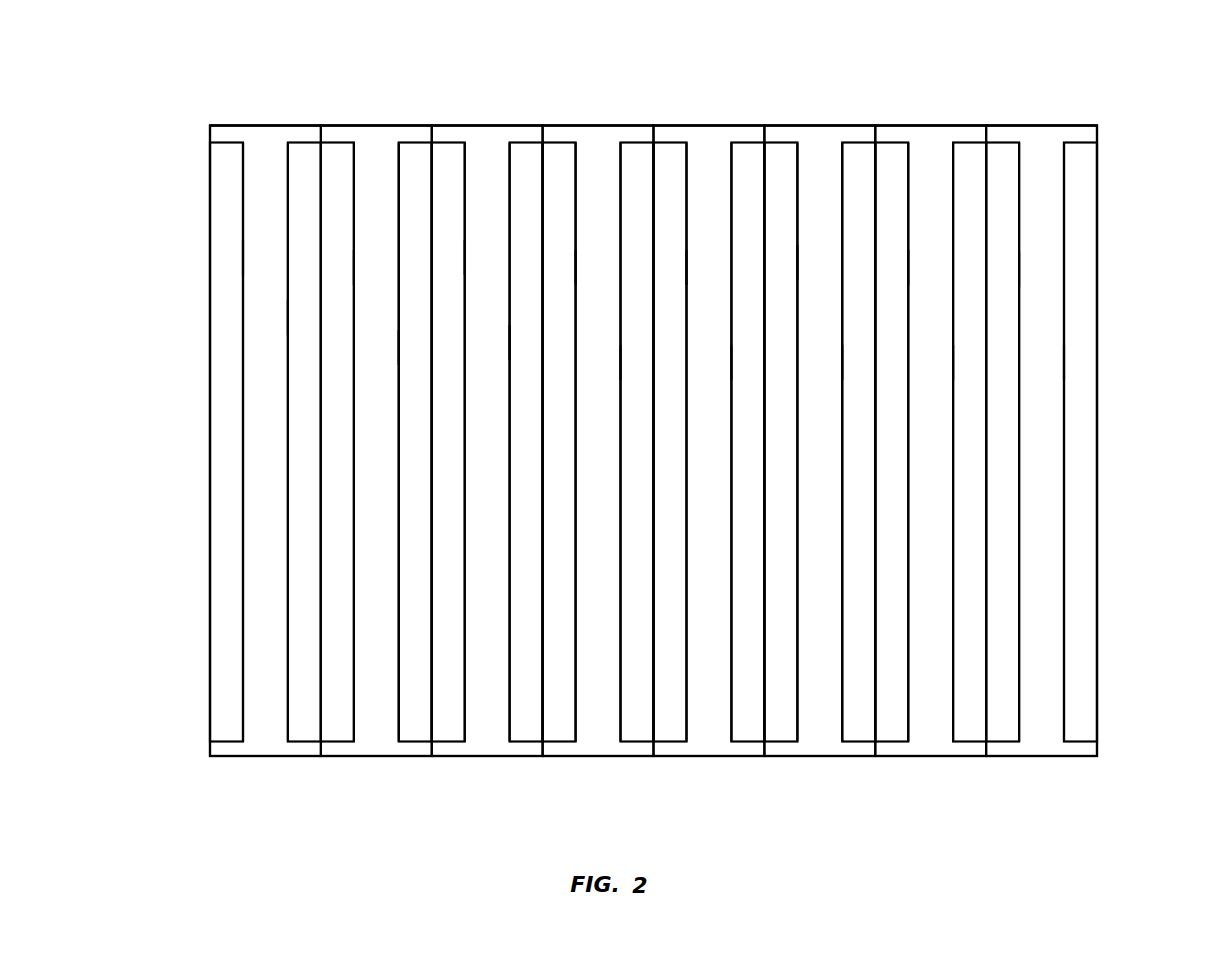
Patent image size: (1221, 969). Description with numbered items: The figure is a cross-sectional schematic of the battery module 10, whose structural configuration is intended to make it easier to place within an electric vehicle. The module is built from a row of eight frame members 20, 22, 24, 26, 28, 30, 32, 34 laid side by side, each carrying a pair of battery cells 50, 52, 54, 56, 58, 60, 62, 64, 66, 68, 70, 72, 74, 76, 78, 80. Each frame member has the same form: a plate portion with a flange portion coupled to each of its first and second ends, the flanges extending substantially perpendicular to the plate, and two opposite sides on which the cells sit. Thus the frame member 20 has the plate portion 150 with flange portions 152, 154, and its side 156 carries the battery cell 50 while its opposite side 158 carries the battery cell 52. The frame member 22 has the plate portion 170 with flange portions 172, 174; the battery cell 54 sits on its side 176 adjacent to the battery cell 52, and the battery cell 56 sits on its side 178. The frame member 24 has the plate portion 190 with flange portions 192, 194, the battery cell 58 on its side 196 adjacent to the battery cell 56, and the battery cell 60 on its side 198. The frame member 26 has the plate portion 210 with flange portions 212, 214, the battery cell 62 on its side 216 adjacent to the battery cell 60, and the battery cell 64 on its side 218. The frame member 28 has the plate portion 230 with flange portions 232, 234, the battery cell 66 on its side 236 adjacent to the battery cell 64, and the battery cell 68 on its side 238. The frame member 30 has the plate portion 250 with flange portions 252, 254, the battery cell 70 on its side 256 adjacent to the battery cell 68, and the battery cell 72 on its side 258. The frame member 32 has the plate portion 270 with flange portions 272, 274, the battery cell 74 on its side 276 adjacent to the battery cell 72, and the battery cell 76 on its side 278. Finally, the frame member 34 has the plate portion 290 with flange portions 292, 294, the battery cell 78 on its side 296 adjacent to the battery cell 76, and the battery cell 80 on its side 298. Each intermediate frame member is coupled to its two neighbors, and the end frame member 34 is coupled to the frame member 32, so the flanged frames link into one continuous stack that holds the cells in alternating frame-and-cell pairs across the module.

The battery module 10 is at (1163, 97).
The frame member 20 is at (253, 617).
The frame member 22 is at (366, 617).
The frame member 24 is at (475, 617).
The frame member 26 is at (582, 617).
The frame member 28 is at (695, 617).
The frame member 30 is at (805, 617).
The frame member 32 is at (917, 617).
The frame member 34 is at (1026, 617).
The battery cell 50 is at (210, 505).
The battery cell 52 is at (288, 498).
The battery cell 54 is at (354, 498).
The battery cell 56 is at (399, 477).
The battery cell 58 is at (465, 505).
The battery cell 60 is at (510, 480).
The battery cell 62 is at (576, 515).
The battery cell 64 is at (620, 485).
The battery cell 66 is at (686, 515).
The battery cell 68 is at (731, 485).
The battery cell 70 is at (797, 515).
The battery cell 72 is at (842, 485).
The battery cell 74 is at (908, 515).
The battery cell 76 is at (953, 480).
The battery cell 78 is at (1019, 505).
The battery cell 80 is at (1064, 480).
The plate portion 150 is at (257, 180).
The flange portion 152 is at (263, 742).
The flange portion 154 is at (231, 133).
The side 156 is at (243, 257).
The side 158 is at (288, 318).
The plate portion 170 is at (380, 165).
The flange portion 172 is at (386, 742).
The flange portion 174 is at (344, 133).
The side 176 is at (354, 268).
The side 178 is at (399, 350).
The plate portion 190 is at (490, 175).
The flange portion 192 is at (498, 742).
The flange portion 194 is at (460, 133).
The side 196 is at (465, 258).
The side 198 is at (510, 345).
The plate portion 210 is at (598, 165).
The flange portion 212 is at (598, 742).
The flange portion 214 is at (565, 135).
The side 216 is at (576, 268).
The side 218 is at (620, 362).
The plate portion 230 is at (712, 165).
The flange portion 232 is at (714, 742).
The flange portion 234 is at (675, 133).
The side 236 is at (686, 268).
The side 238 is at (731, 362).
The plate portion 250 is at (820, 165).
The flange portion 252 is at (828, 742).
The flange portion 254 is at (783, 133).
The side 256 is at (797, 265).
The side 258 is at (842, 362).
The plate portion 270 is at (933, 165).
The flange portion 272 is at (940, 742).
The flange portion 274 is at (892, 133).
The side 276 is at (908, 268).
The side 278 is at (953, 362).
The plate portion 290 is at (1040, 175).
The flange portion 292 is at (1050, 742).
The flange portion 294 is at (998, 133).
The side 296 is at (1019, 270).
The side 298 is at (1064, 362).